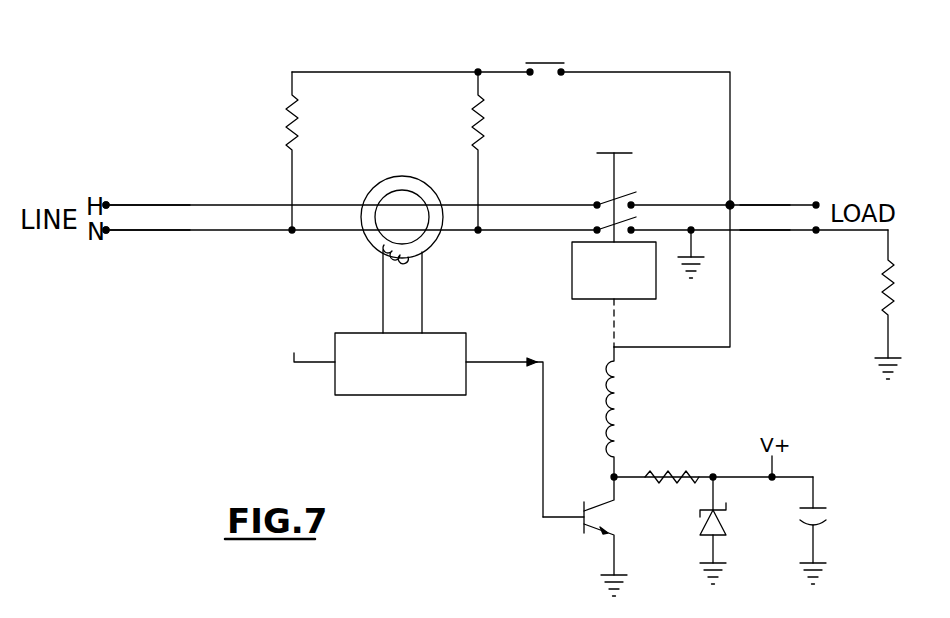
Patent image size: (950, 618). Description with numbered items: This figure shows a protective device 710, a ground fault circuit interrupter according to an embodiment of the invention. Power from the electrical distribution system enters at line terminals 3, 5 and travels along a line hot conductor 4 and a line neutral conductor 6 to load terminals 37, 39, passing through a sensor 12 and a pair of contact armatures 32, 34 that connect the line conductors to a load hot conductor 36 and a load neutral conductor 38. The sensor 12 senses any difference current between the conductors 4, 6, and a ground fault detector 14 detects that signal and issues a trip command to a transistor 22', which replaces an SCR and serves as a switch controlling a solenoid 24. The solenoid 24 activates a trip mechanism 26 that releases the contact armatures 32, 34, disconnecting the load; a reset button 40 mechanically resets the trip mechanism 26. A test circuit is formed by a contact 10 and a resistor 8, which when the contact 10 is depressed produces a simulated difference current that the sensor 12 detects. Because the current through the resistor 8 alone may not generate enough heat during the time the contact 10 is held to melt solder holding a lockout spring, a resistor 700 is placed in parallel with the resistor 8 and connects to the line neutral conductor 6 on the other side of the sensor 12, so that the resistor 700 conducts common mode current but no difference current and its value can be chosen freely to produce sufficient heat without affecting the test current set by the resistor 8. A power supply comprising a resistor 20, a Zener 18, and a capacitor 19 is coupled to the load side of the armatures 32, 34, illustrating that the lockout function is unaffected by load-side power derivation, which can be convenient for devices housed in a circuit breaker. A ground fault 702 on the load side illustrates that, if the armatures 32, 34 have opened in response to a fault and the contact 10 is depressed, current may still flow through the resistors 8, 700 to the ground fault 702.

The line terminal 3 is at (108, 203).
The line hot conductor 4 is at (168, 203).
The line terminal 5 is at (107, 232).
The line neutral conductor 6 is at (168, 232).
The resistor 8 is at (282, 126).
The resistor 700 is at (476, 126).
The contact 10 is at (546, 63).
The protective device 710 is at (657, 48).
The sensor 12 is at (369, 239).
The ground fault detector 14 is at (336, 385).
The contact armature 32 is at (606, 200).
The contact armature 34 is at (600, 228).
The reset button 40 is at (616, 153).
The trip mechanism 26 is at (570, 272).
The load hot conductor 36 is at (790, 203).
The load terminal 37 is at (818, 203).
The load neutral conductor 38 is at (790, 232).
The load terminal 39 is at (818, 232).
The ground fault 702 is at (882, 302).
The solenoid 24 is at (619, 410).
The resistor 20 is at (663, 468).
The Zener 18 is at (720, 531).
The capacitor 19 is at (824, 500).
The transistor 22' is at (611, 536).